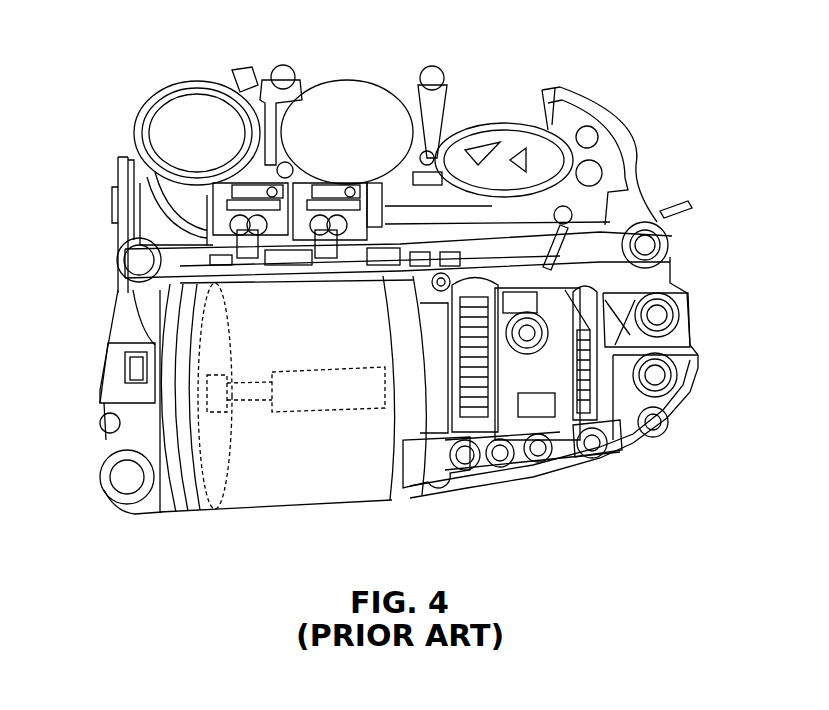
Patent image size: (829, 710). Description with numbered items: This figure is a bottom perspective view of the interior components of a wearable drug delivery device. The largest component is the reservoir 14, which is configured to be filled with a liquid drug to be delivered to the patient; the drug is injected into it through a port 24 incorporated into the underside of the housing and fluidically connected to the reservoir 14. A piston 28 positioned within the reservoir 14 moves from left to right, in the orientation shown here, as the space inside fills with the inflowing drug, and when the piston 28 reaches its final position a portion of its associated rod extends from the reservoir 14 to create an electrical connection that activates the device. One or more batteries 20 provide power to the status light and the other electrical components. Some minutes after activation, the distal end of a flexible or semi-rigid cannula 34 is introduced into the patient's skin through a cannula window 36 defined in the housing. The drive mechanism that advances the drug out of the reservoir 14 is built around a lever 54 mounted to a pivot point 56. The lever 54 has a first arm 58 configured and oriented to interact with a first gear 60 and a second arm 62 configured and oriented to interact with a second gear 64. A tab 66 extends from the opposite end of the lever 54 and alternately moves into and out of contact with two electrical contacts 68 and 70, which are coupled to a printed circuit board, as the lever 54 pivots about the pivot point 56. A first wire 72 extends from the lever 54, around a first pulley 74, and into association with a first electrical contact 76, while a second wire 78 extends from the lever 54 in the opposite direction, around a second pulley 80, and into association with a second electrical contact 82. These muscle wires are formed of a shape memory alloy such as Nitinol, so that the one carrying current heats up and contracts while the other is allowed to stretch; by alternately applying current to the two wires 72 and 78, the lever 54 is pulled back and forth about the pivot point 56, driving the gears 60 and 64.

The reservoir 14 is at (333, 481).
The batteries 20 is at (333, 97).
The port 24 is at (108, 477).
The piston 28 is at (212, 457).
The cannula 34 is at (663, 222).
The cannula window 36 is at (625, 193).
The lever 54 is at (535, 375).
The pivot point 56 is at (535, 336).
The first arm 58 is at (470, 270).
The first gear 60 is at (480, 380).
The second arm 62 is at (593, 302).
The second gear 64 is at (600, 395).
The tab 66 is at (560, 452).
The electrical contact 68 is at (597, 452).
The electrical contact 70 is at (535, 450).
The first wire 72 is at (165, 251).
The first pulley 74 is at (134, 263).
The first electrical contact 76 is at (257, 222).
The second wire 78 is at (587, 230).
The second pulley 80 is at (652, 246).
The second electrical contact 82 is at (337, 222).